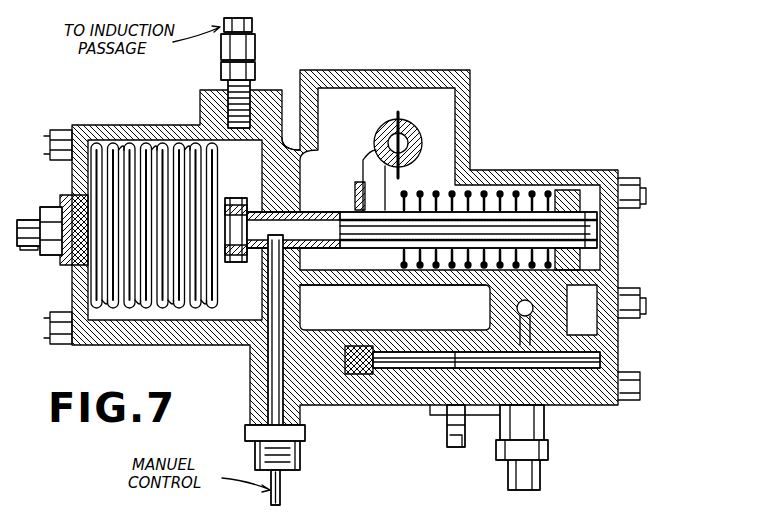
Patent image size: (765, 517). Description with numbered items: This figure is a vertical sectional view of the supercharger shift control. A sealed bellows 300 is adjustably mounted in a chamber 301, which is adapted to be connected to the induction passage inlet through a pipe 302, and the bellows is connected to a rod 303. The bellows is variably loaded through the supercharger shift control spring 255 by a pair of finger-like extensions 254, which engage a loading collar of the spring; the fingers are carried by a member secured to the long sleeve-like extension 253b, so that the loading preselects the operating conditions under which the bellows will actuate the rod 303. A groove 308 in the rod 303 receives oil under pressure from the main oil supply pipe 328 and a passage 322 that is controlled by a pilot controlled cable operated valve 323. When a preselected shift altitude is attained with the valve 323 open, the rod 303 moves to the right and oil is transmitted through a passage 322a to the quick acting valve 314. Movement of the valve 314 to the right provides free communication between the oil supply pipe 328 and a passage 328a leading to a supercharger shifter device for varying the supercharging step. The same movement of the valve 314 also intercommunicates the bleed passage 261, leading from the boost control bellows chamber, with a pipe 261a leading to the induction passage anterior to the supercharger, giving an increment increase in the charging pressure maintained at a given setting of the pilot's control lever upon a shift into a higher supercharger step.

The sealed bellows 300 is at (142, 150).
The chamber 301 is at (102, 140).
The pipe 302 is at (258, 26).
The rod 303 is at (254, 262).
The groove 308 is at (236, 197).
The finger-like extensions 254 is at (372, 163).
The sleeve-like extension 253b is at (408, 128).
The supercharger shift control spring 255 is at (496, 195).
The passage 328a is at (527, 306).
The passage 322a is at (306, 312).
The quick acting valve 314 is at (394, 352).
The bleed passage 261 is at (458, 350).
The pilot controlled cable operated valve 323 is at (265, 396).
The passage 322 is at (340, 395).
The pipe 261a is at (455, 447).
The main oil supply pipe 328 is at (545, 472).